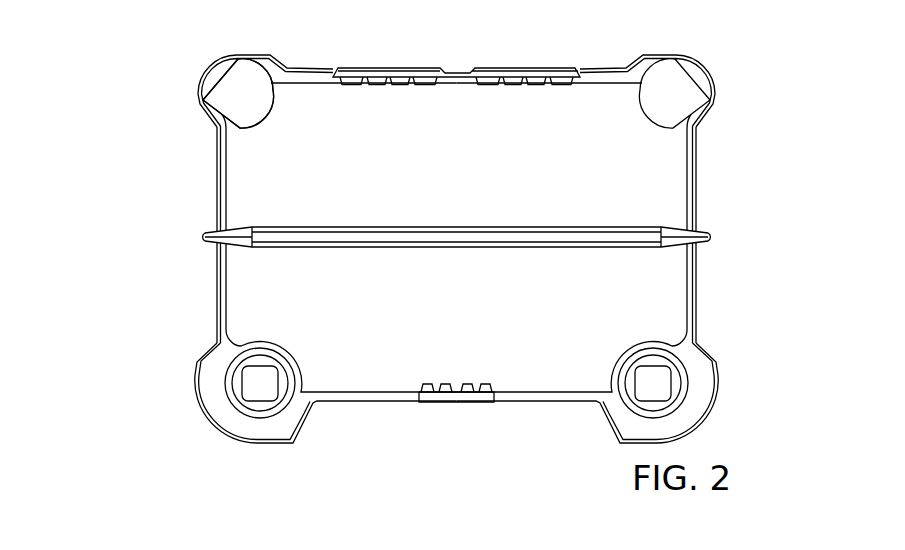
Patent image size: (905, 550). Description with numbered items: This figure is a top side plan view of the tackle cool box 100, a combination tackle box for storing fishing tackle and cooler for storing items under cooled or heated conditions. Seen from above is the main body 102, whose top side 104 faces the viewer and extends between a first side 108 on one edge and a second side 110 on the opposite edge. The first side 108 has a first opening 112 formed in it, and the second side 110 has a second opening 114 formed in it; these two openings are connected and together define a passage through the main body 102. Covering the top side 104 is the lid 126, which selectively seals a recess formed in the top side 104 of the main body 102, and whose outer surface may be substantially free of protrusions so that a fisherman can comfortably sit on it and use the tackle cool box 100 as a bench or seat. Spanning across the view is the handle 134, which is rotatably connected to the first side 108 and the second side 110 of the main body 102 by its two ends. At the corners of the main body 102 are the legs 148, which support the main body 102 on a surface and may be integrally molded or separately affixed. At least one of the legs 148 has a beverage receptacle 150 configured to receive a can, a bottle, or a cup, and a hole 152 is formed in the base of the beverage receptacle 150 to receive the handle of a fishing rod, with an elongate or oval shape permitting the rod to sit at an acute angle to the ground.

The tackle cool box 100 is at (447, 232).
The main body 102 is at (447, 249).
The top side 104 is at (524, 142).
The first side 108 is at (141, 234).
The first opening 112 is at (186, 287).
The second side 110 is at (762, 234).
The second opening 114 is at (714, 296).
The lid 126 is at (243, 200).
The handle 134 is at (456, 227).
The legs 148 is at (680, 443).
The beverage receptacle 150 is at (687, 388).
The hole 152 is at (646, 407).